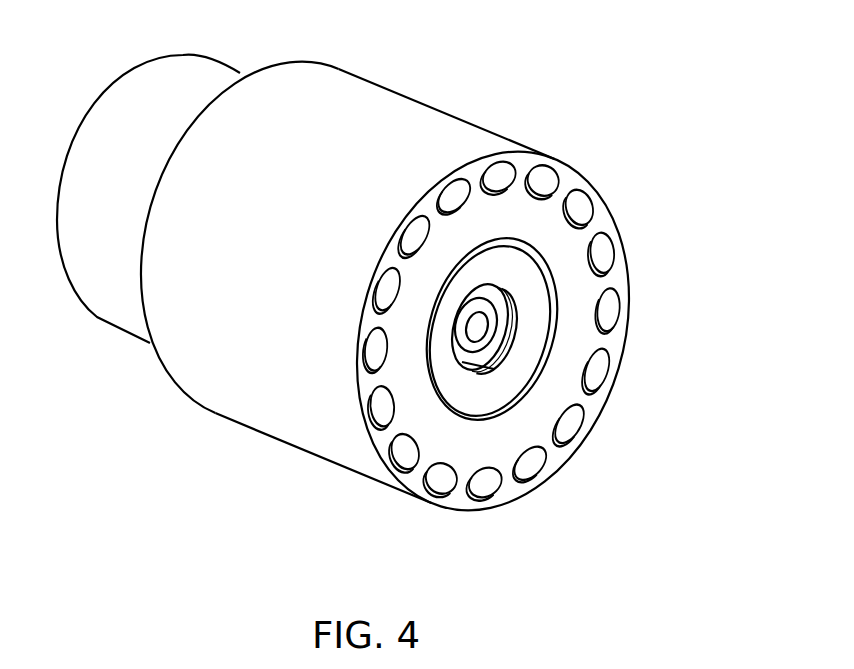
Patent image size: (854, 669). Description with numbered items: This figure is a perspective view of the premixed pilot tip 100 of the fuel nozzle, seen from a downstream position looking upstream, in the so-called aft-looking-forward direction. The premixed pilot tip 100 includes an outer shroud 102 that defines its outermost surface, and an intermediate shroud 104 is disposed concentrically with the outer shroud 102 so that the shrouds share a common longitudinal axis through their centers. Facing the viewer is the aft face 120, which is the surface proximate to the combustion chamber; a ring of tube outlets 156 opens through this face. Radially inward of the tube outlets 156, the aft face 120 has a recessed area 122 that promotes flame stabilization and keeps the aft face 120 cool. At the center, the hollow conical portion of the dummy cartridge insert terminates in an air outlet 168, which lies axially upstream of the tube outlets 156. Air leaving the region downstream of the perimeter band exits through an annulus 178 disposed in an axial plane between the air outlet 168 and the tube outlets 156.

The premixed pilot tip 100 is at (422, 60).
The outer shroud 102 is at (228, 400).
The intermediate shroud 104 is at (97, 298).
The tube outlets 156 is at (580, 203).
The aft face 120 is at (577, 295).
The recessed area 122 is at (518, 368).
The air outlet 168 is at (466, 341).
The annulus 178 is at (492, 347).